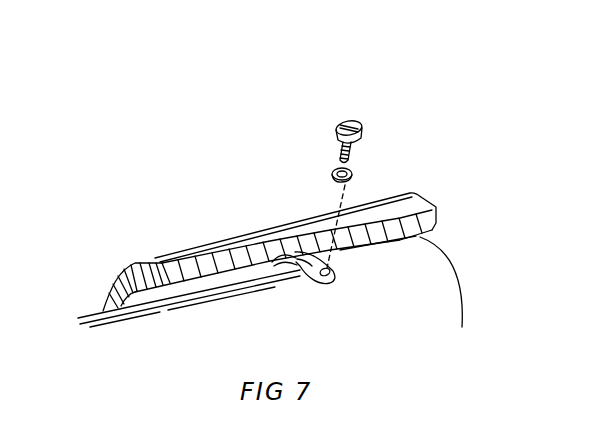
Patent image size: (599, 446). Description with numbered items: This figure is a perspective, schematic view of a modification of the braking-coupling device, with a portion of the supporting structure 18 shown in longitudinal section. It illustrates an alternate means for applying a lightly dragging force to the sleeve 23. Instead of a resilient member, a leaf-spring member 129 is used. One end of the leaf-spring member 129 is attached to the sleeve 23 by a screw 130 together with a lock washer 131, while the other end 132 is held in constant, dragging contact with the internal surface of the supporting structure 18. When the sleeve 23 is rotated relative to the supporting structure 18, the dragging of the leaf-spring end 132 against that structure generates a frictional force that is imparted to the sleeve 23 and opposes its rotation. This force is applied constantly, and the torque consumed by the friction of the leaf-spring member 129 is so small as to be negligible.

The supporting structure 18 is at (217, 243).
The sleeve 23 is at (453, 272).
The leaf-spring member 129 is at (336, 275).
The screw 130 is at (363, 125).
The lock washer 131 is at (354, 172).
The other end of the leaf-spring member 132 is at (292, 243).